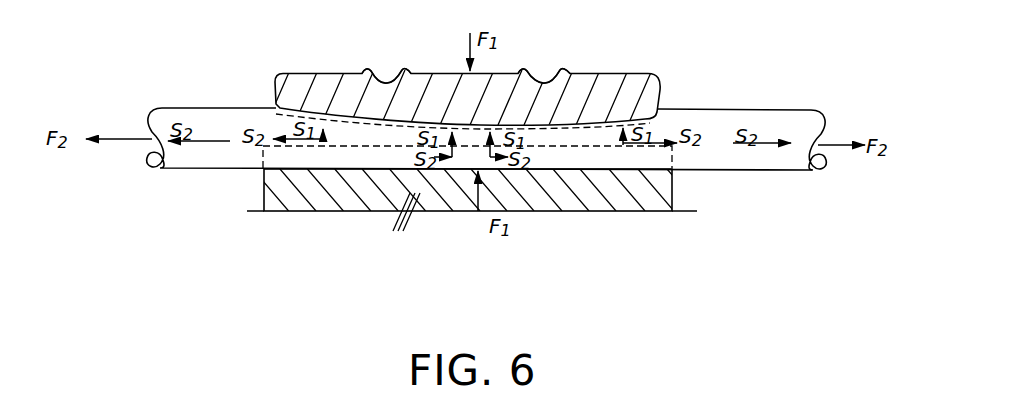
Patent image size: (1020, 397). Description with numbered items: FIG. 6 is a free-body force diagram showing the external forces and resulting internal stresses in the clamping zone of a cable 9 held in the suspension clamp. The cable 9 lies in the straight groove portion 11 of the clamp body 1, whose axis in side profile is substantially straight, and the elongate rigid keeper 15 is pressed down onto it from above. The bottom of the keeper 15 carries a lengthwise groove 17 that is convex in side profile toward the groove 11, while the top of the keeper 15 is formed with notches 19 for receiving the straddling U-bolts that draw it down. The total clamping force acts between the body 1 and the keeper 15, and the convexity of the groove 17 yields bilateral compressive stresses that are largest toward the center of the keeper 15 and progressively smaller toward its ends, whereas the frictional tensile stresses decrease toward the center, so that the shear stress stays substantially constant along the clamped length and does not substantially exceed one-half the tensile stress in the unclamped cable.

The clamp body 1 is at (573, 201).
The cable 9 is at (749, 171).
The straight groove portion 11 is at (668, 166).
The keeper 15 is at (646, 72).
The groove 17 is at (503, 121).
The notches 19 is at (371, 70).